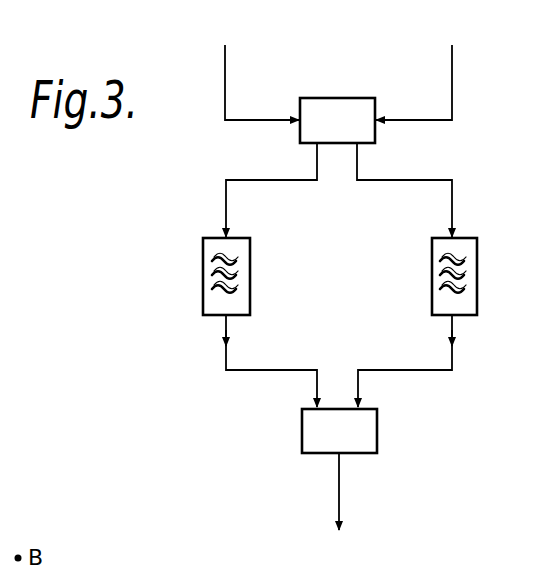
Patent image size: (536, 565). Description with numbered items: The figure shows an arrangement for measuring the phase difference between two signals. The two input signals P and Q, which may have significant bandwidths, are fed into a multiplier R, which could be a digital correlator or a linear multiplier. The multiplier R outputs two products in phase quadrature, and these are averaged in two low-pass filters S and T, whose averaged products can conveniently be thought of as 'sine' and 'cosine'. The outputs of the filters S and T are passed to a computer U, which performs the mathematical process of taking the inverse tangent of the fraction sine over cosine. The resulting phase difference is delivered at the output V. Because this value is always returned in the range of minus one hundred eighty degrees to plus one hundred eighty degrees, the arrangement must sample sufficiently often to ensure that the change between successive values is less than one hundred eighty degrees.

The signal P is at (258, 66).
The signal Q is at (418, 66).
The multiplier R is at (337, 104).
The low-pass filter S is at (260, 322).
The low-pass filter T is at (428, 322).
The computer U is at (312, 432).
The phase difference output V is at (340, 508).